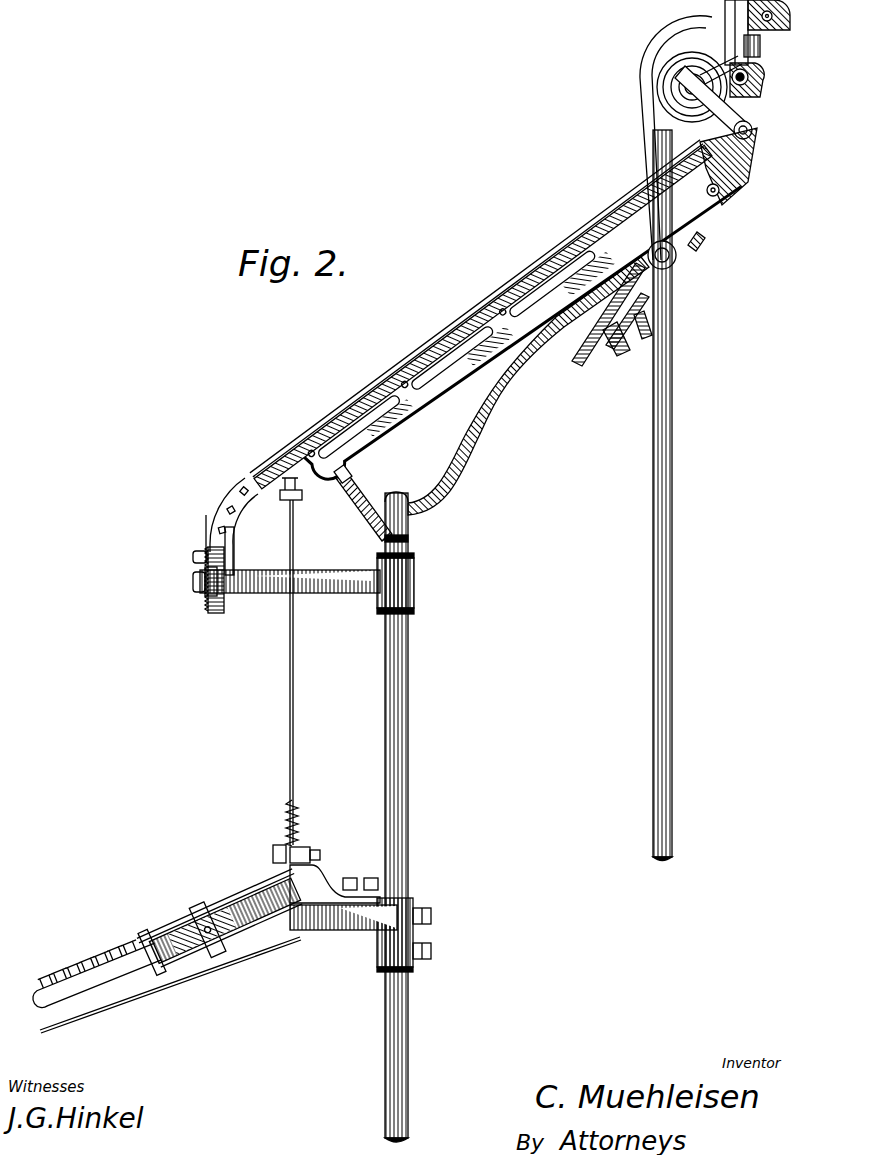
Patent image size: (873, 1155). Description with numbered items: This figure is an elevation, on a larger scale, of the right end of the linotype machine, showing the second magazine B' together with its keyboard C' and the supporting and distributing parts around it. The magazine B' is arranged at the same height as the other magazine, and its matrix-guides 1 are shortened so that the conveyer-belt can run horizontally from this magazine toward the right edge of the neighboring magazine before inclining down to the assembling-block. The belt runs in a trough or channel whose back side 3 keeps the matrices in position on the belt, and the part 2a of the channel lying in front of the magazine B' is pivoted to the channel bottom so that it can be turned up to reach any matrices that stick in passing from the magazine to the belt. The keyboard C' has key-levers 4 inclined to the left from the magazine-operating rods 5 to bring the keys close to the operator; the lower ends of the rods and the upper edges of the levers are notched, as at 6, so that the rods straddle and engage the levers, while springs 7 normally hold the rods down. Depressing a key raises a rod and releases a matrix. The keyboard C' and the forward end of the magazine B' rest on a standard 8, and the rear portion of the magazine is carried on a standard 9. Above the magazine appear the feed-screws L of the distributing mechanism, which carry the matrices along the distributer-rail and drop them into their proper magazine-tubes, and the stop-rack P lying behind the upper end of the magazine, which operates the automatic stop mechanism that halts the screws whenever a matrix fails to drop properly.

The matrix-guides 1 is at (230, 498).
The pivoted channel part 2a is at (206, 536).
The back side of channel 3 is at (234, 549).
The key-levers 4 is at (181, 934).
The magazine-operating rods 5 is at (296, 734).
The notched connection 6 is at (290, 889).
The springs 7 is at (302, 829).
The standard 8 is at (393, 773).
The standard 9 is at (669, 621).
The magazine B' is at (495, 330).
The keyboard C' is at (163, 983).
The feed-screws L is at (764, 68).
The stop-rack P is at (757, 100).